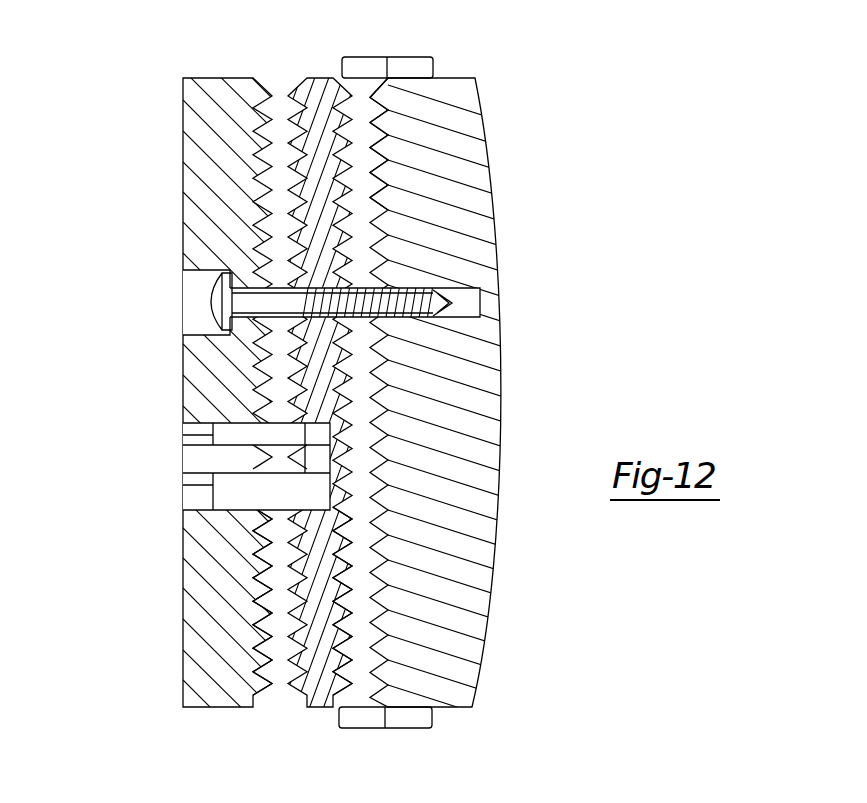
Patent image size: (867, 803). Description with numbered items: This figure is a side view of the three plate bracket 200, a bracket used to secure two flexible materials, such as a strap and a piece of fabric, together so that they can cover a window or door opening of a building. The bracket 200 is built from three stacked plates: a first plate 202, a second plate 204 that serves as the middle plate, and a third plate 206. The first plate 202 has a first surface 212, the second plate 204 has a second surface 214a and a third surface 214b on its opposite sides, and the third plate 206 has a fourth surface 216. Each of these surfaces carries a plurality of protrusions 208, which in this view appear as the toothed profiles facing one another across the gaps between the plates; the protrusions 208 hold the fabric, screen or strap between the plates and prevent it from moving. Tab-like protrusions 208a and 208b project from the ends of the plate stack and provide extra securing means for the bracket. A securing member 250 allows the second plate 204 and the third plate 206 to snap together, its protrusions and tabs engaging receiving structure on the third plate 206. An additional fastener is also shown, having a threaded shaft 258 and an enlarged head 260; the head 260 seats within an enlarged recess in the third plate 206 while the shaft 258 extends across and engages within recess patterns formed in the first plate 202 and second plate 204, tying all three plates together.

The three plate bracket 200 is at (306, 399).
The first plate 202 is at (478, 573).
The second plate 204 is at (323, 698).
The third plate 206 is at (190, 675).
The protrusions 208 is at (389, 399).
The upper tab 208a is at (407, 62).
The lower tab 208b is at (407, 723).
The first surface 212 is at (377, 103).
The second surface 214a is at (342, 622).
The third surface 214b is at (297, 625).
The fourth surface 216 is at (272, 582).
The securing member 250 is at (195, 503).
The threaded shafts 258 is at (253, 282).
The enlarged heads 260 is at (212, 302).